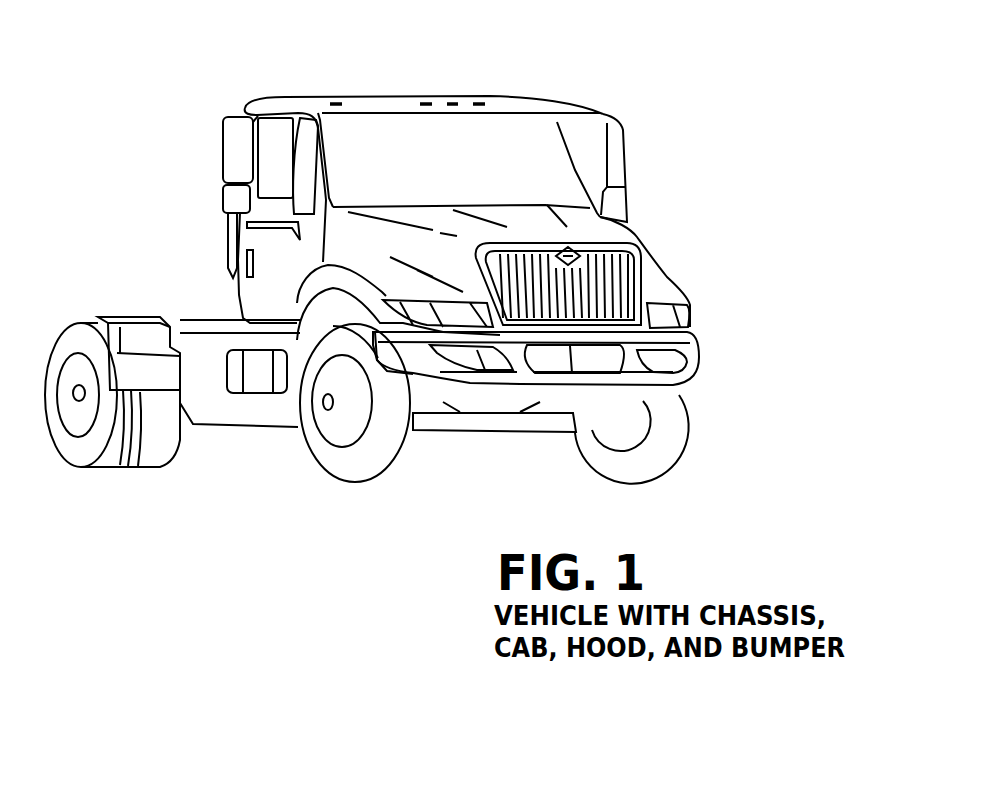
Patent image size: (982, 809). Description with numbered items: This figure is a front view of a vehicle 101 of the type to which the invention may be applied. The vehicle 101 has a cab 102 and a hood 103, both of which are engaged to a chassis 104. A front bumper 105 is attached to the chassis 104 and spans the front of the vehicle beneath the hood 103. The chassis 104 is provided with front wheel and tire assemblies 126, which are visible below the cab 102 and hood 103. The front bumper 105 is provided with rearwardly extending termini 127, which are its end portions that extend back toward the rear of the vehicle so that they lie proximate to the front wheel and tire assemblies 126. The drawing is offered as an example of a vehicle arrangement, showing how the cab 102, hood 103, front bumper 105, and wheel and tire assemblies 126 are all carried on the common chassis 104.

The vehicle 101 is at (507, 91).
The cab 102 is at (322, 93).
The hood 103 is at (642, 236).
The chassis 104 is at (262, 428).
The front bumper 105 is at (700, 367).
The front wheel and tire assemblies 126 is at (345, 460).
The rearwardly extending termini 127 is at (395, 358).